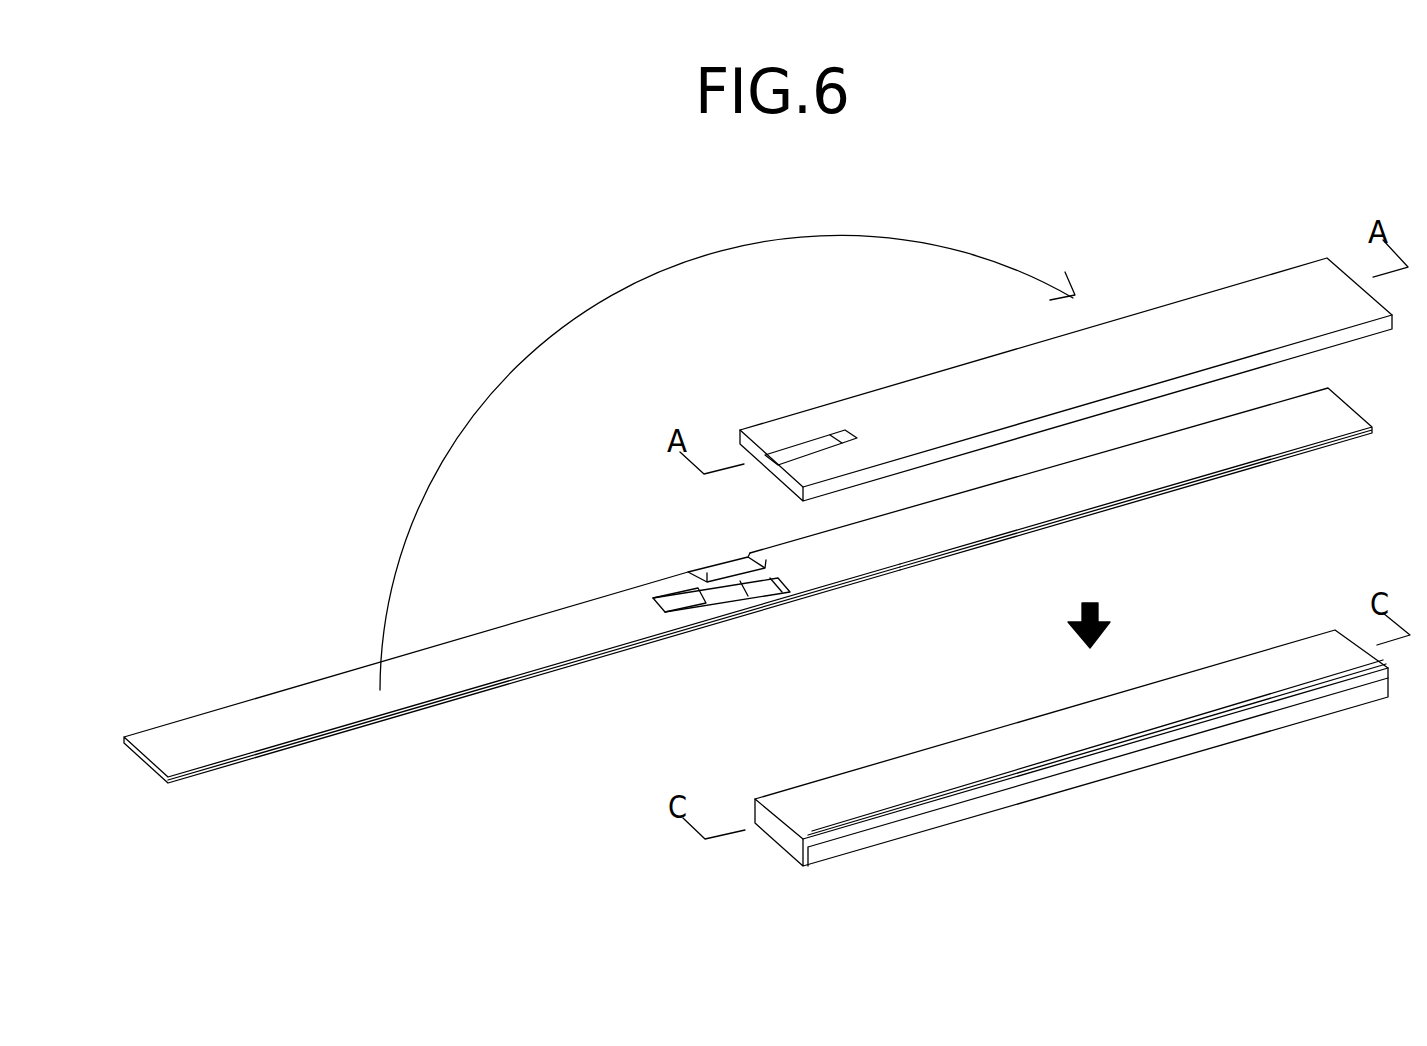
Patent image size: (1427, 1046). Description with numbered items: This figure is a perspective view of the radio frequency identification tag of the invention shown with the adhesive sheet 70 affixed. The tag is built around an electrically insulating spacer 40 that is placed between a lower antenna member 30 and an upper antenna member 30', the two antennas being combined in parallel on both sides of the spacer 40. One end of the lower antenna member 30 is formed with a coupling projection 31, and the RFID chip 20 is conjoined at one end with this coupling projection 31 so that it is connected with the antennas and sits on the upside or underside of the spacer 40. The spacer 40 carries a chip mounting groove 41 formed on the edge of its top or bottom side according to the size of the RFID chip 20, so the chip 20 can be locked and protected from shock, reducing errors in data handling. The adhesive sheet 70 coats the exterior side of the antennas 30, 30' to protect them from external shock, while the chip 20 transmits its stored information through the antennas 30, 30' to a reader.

The electrically insulating spacer 40 is at (1214, 286).
The chip mounting groove 41 is at (800, 450).
The adhesive sheet 70 is at (733, 570).
The lower antenna member 30 is at (1061, 479).
The upper antenna member 30' is at (512, 673).
The coupling projection 31 is at (773, 603).
The RFID chip 20 is at (678, 603).